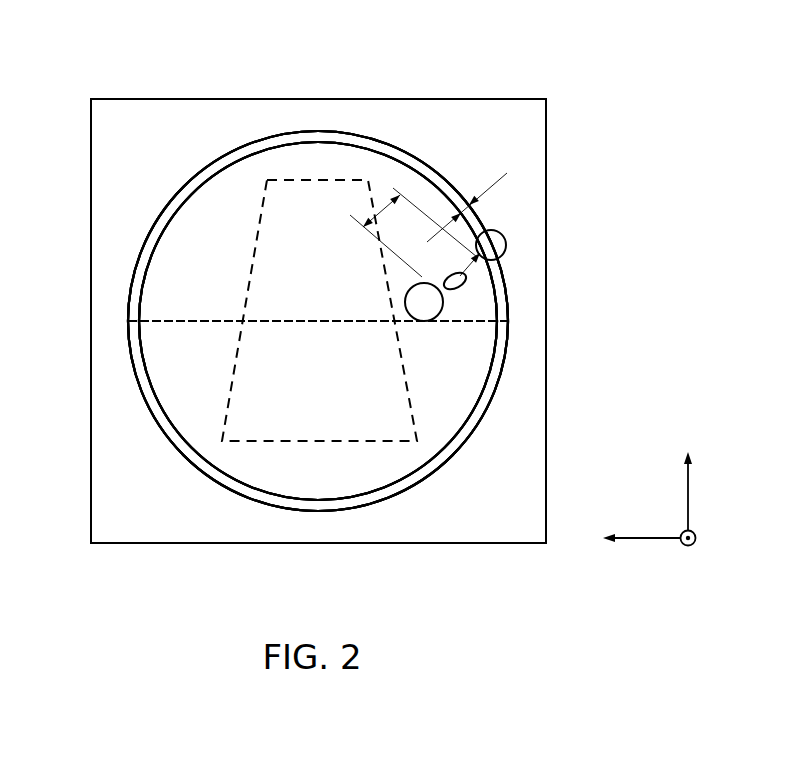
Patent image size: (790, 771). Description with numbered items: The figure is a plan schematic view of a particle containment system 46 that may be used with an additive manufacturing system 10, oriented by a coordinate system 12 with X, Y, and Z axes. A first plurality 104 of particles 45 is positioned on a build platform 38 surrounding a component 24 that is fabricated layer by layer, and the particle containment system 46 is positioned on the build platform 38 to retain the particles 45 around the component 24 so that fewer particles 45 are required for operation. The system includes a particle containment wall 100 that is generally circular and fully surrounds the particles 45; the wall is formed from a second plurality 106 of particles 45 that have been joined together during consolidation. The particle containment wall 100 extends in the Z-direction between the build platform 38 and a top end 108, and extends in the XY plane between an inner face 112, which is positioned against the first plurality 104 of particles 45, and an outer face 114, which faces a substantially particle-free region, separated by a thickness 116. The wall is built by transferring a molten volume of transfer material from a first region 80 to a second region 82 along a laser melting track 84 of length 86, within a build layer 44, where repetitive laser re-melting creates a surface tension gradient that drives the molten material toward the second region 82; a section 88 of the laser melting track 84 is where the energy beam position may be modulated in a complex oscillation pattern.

The additive manufacturing system 10 is at (484, 58).
The coordinate system 12 is at (660, 514).
The component 24 is at (337, 427).
The build platform 38 is at (528, 178).
The build layer 44 is at (173, 403).
The particles 45 is at (205, 235).
The particle containment system 46 is at (575, 274).
The first region 80 is at (445, 318).
The second region 82 is at (507, 245).
The laser melting track 84 is at (468, 280).
The length 86 is at (380, 200).
The section 88 is at (464, 290).
The particle containment wall 100 is at (130, 280).
The first plurality of particles 104 is at (253, 172).
The second plurality of particles 106 is at (228, 490).
The top end 108 is at (275, 142).
The inner face 112 is at (332, 140).
The outer face 114 is at (378, 138).
The thickness 116 is at (453, 205).